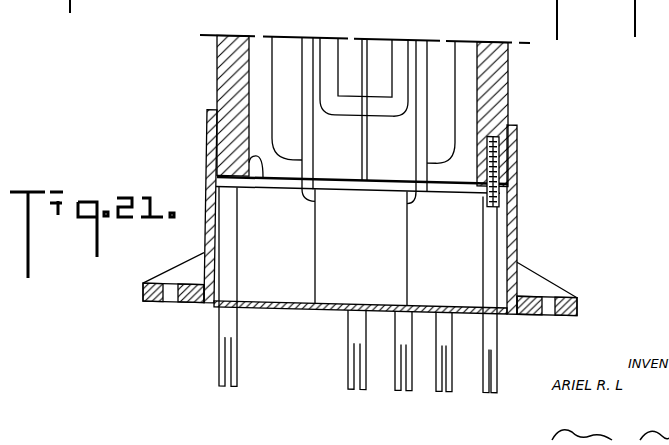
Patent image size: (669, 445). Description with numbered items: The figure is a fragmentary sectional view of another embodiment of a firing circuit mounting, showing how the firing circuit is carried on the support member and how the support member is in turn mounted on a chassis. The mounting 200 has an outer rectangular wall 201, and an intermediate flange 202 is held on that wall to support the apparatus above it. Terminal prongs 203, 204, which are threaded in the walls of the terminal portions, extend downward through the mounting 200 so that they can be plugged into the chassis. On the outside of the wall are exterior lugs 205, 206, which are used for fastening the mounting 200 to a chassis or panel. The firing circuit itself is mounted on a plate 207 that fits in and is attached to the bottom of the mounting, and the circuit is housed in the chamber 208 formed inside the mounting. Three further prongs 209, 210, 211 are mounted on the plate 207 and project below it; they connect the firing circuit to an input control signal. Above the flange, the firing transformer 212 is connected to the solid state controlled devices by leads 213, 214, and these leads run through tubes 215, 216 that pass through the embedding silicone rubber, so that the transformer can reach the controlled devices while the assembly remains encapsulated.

The mounting 200 is at (548, 160).
The outer rectangular wall 201 is at (515, 218).
The intermediate flange 202 is at (207, 156).
The terminal prong 203 is at (213, 319).
The terminal prong 204 is at (500, 336).
The exterior lug 205 is at (143, 291).
The exterior lug 206 is at (578, 303).
The plate 207 is at (290, 308).
The chamber 208 is at (207, 241).
The prong 209 is at (351, 390).
The prong 210 is at (395, 391).
The prong 211 is at (441, 393).
The firing transformer 212 is at (350, 277).
The lead 213 is at (316, 197).
The lead 214 is at (418, 203).
The tube 215 is at (316, 125).
The tube 216 is at (420, 172).